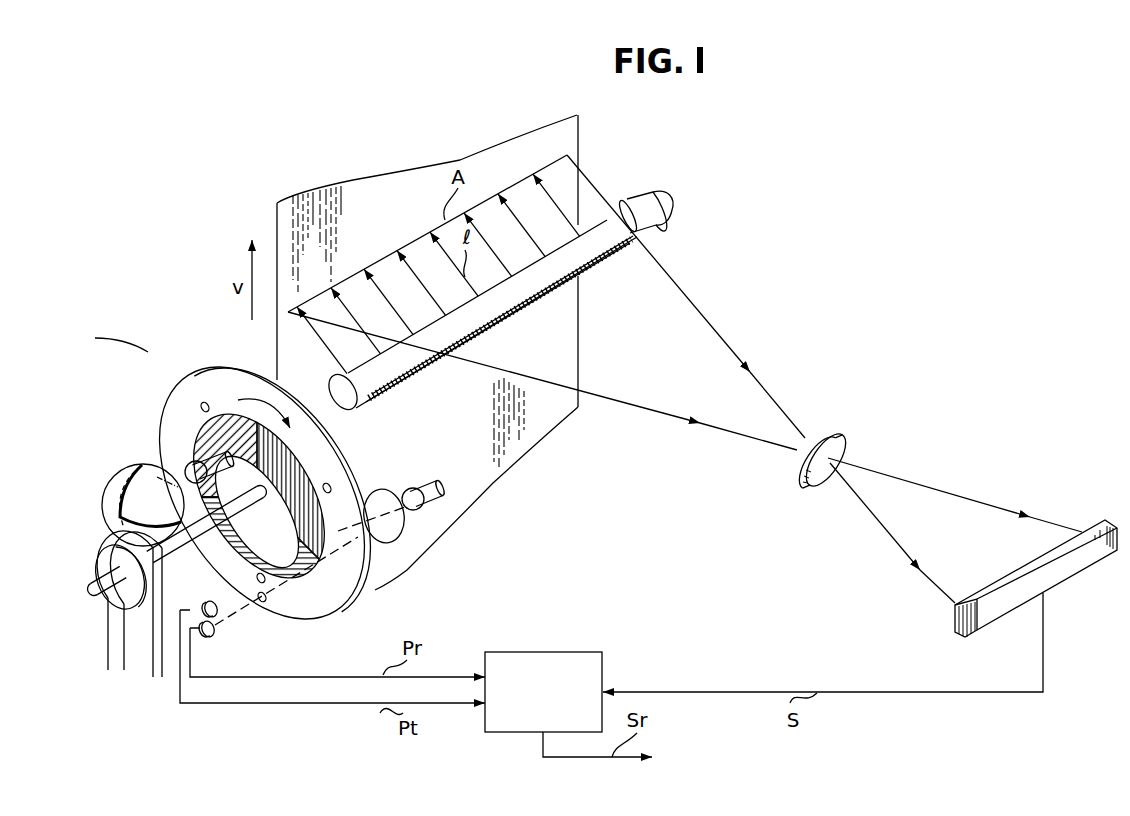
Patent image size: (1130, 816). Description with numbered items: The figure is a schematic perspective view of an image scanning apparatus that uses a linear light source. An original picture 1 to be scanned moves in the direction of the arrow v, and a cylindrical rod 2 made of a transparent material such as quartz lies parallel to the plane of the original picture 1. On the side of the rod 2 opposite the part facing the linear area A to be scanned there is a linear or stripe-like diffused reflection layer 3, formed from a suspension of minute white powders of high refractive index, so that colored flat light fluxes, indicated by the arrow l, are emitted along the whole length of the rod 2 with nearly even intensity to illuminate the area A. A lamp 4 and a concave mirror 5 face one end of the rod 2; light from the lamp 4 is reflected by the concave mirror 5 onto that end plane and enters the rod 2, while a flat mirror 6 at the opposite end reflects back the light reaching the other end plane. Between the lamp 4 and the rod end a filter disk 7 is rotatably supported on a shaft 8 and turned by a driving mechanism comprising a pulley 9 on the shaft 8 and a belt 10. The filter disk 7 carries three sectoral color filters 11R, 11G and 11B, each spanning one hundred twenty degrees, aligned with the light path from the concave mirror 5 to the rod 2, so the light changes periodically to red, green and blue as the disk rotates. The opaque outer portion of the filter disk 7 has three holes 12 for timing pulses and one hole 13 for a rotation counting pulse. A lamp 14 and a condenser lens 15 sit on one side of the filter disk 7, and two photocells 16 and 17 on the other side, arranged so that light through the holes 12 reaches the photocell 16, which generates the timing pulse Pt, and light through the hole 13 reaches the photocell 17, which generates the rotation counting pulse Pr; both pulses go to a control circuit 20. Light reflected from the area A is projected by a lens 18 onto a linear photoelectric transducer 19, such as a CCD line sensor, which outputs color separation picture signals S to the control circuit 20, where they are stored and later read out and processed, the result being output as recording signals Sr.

The original picture 1 is at (533, 410).
The cylindrical rod 2 is at (622, 208).
The diffused reflection layer 3 is at (607, 260).
The lamp 4 is at (189, 468).
The concave mirror 5 is at (122, 472).
The flat mirror 6 is at (662, 212).
The filter disk 7 is at (327, 612).
The shaft 8 is at (165, 570).
The pulley 9 is at (103, 560).
The belt 10 is at (115, 625).
The green color filter 11G is at (243, 425).
The red color filter 11R is at (322, 452).
The blue color filter 11B is at (240, 535).
The holes 12 is at (205, 407).
The hole 13 is at (262, 600).
The lamp 14 is at (428, 482).
The condenser lens 15 is at (393, 535).
The photocell 16 is at (222, 614).
The photocell 17 is at (213, 637).
The lens 18 is at (840, 432).
The linear photoelectric transducer 19 is at (1080, 567).
The control circuit 20 is at (552, 652).